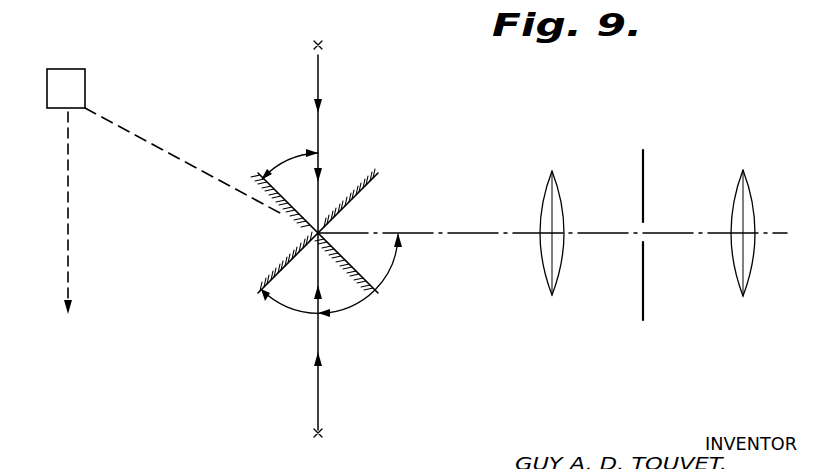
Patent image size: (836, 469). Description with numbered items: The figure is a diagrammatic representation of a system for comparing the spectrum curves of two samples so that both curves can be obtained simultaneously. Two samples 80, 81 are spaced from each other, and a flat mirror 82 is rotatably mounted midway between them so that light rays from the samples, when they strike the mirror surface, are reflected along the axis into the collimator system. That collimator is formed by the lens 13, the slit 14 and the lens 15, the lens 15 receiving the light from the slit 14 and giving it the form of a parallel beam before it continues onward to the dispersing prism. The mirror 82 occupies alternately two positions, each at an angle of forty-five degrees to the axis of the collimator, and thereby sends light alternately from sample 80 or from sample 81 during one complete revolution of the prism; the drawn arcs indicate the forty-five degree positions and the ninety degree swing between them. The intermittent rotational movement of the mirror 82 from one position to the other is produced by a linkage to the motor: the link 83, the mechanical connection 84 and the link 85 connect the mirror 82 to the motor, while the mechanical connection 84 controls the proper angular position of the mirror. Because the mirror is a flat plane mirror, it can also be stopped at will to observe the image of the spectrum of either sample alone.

The lens 13 is at (553, 170).
The slit 14 is at (645, 152).
The lens 15 is at (765, 150).
The sample 80 is at (318, 55).
The sample 81 is at (303, 348).
The flat mirror 82 is at (350, 201).
The link 83 is at (152, 143).
The mechanical connection 84 is at (74, 77).
The link 85 is at (70, 230).